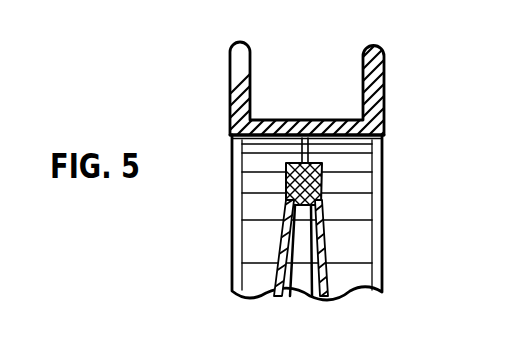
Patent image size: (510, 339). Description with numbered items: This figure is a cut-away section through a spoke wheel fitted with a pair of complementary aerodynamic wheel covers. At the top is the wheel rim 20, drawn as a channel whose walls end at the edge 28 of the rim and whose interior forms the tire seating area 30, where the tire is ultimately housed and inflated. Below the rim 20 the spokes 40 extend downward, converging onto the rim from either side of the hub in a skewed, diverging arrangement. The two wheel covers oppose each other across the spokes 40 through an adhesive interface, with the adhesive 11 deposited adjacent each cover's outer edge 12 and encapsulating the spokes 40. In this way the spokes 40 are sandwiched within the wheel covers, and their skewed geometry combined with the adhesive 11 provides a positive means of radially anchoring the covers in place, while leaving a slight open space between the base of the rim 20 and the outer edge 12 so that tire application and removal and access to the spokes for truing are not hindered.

The edge of the rim 28 is at (373, 48).
The tire seating area 30 is at (313, 64).
The wheel rim 20 is at (383, 266).
The adhesive 11 is at (318, 194).
The outer edge 12 is at (288, 208).
The spokes 40 is at (320, 236).